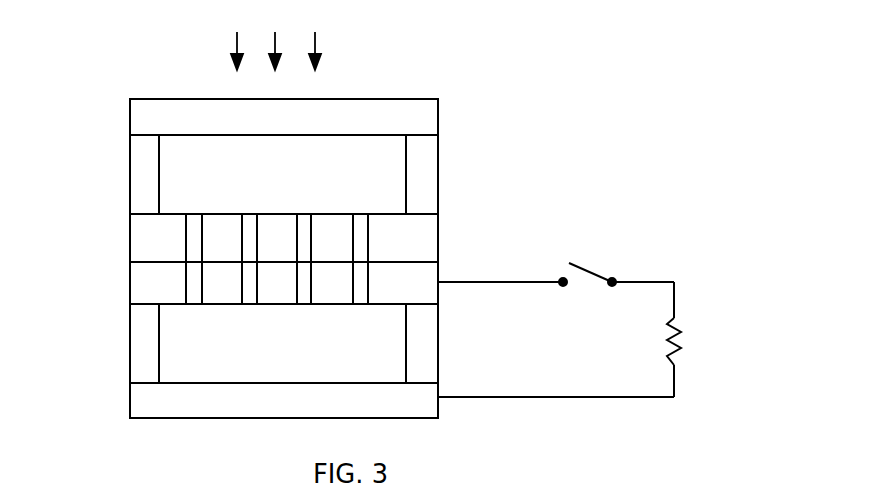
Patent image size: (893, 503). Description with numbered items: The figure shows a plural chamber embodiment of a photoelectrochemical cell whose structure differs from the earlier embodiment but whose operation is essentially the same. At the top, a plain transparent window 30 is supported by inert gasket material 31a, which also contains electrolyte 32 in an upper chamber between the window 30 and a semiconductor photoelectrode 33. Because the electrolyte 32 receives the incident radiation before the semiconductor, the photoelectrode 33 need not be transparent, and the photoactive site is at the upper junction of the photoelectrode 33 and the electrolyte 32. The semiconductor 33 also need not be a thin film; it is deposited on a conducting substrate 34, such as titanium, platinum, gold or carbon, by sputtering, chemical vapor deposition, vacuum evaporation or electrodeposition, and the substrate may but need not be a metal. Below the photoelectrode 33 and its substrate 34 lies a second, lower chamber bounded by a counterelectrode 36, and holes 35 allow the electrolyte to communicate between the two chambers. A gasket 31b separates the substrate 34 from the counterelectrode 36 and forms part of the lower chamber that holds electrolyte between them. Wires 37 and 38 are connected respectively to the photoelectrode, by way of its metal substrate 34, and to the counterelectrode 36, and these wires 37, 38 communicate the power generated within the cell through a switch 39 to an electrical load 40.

The transparent window 30 is at (130, 115).
The inert gasket material 31a is at (130, 158).
The electrolyte 32 is at (178, 187).
The semiconductor photoelectrode 33 is at (137, 237).
The conducting substrate 34 is at (130, 293).
The holes 35 is at (242, 276).
The gasket 31b is at (130, 342).
The counterelectrode 36 is at (130, 397).
The wire 37 is at (502, 282).
The wire 38 is at (568, 397).
The switch 39 is at (593, 272).
The electrical load 40 is at (683, 337).